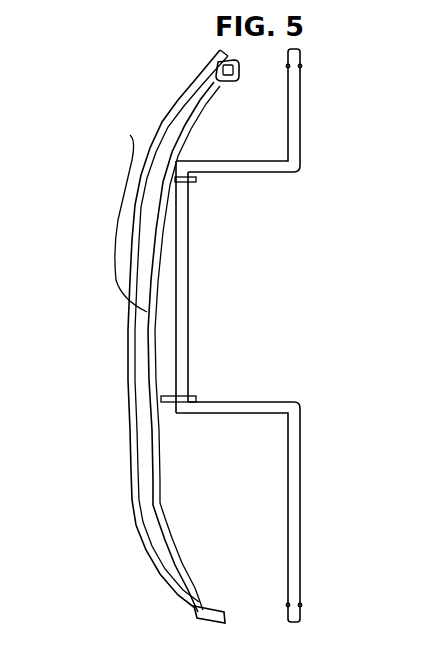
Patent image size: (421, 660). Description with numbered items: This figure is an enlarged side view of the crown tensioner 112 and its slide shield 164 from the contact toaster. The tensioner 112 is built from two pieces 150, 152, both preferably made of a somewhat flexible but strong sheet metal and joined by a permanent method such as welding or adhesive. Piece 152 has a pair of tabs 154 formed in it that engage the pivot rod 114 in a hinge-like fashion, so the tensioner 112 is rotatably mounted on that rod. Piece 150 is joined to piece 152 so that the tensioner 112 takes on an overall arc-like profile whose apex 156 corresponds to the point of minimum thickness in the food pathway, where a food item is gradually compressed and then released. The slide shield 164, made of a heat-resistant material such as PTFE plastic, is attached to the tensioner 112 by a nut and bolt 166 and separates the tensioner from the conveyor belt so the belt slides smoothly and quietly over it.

The tensioner 112 is at (203, 572).
The pivot rod 114 is at (300, 92).
The piece 150 is at (130, 446).
The piece 152 is at (178, 296).
The tabs 154 is at (198, 180).
The apex 156 is at (130, 135).
The slide shield 164 is at (157, 575).
The nut and bolt 166 is at (210, 78).